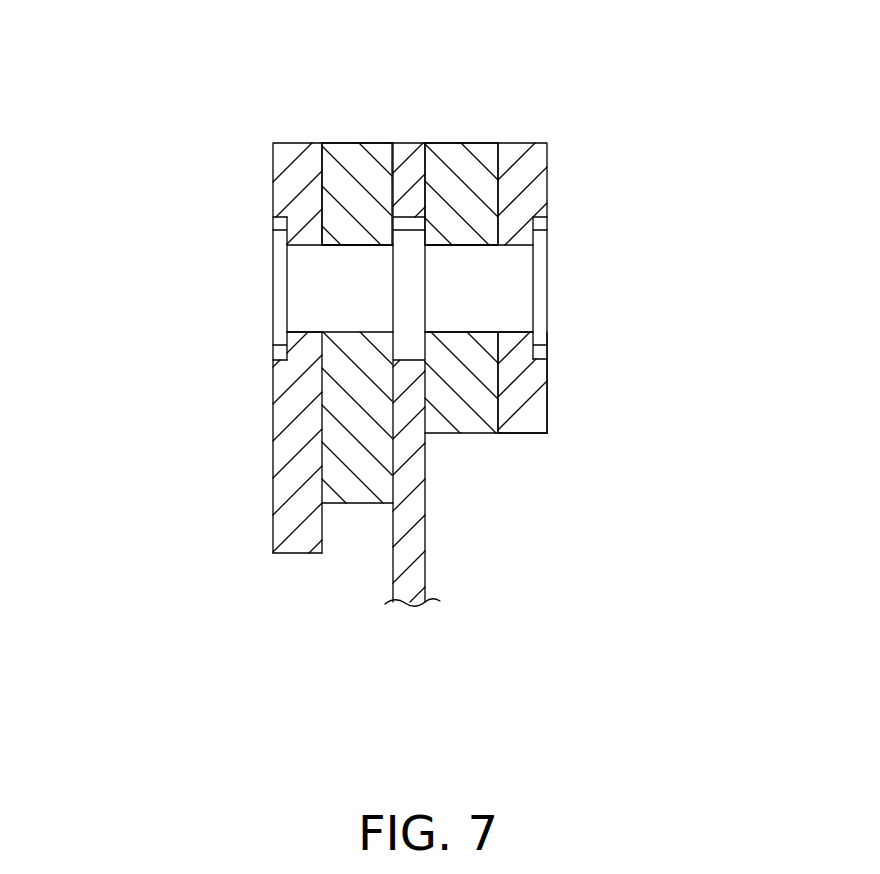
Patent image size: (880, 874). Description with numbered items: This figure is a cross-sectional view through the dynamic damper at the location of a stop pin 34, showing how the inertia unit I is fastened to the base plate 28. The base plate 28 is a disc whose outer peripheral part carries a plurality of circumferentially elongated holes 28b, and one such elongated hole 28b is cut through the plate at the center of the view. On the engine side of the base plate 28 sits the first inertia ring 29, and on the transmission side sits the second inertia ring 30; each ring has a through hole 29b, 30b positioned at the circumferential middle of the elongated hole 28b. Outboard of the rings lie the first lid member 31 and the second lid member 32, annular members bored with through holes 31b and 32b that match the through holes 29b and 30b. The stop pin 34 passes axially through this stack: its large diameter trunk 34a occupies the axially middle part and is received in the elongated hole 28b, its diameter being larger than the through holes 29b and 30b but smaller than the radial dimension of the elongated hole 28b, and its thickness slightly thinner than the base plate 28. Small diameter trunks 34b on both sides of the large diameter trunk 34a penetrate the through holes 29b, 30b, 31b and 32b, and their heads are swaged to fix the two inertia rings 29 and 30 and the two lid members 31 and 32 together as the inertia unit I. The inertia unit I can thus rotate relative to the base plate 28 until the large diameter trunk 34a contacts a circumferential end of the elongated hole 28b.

The base plate 28 is at (406, 156).
The elongated hole 28b is at (420, 357).
The first inertia ring 29 is at (352, 160).
The through hole 29b is at (360, 245).
The second inertia ring 30 is at (468, 155).
The through hole 30b is at (457, 245).
The first lid member 31 is at (285, 544).
The through hole 31b is at (307, 333).
The second lid member 32 is at (522, 415).
The through hole 32b is at (516, 247).
The stop pin 34 is at (343, 335).
The large diameter trunk 34a is at (413, 317).
The small diameter trunk 34b is at (313, 272).
The inertia unit I is at (553, 128).